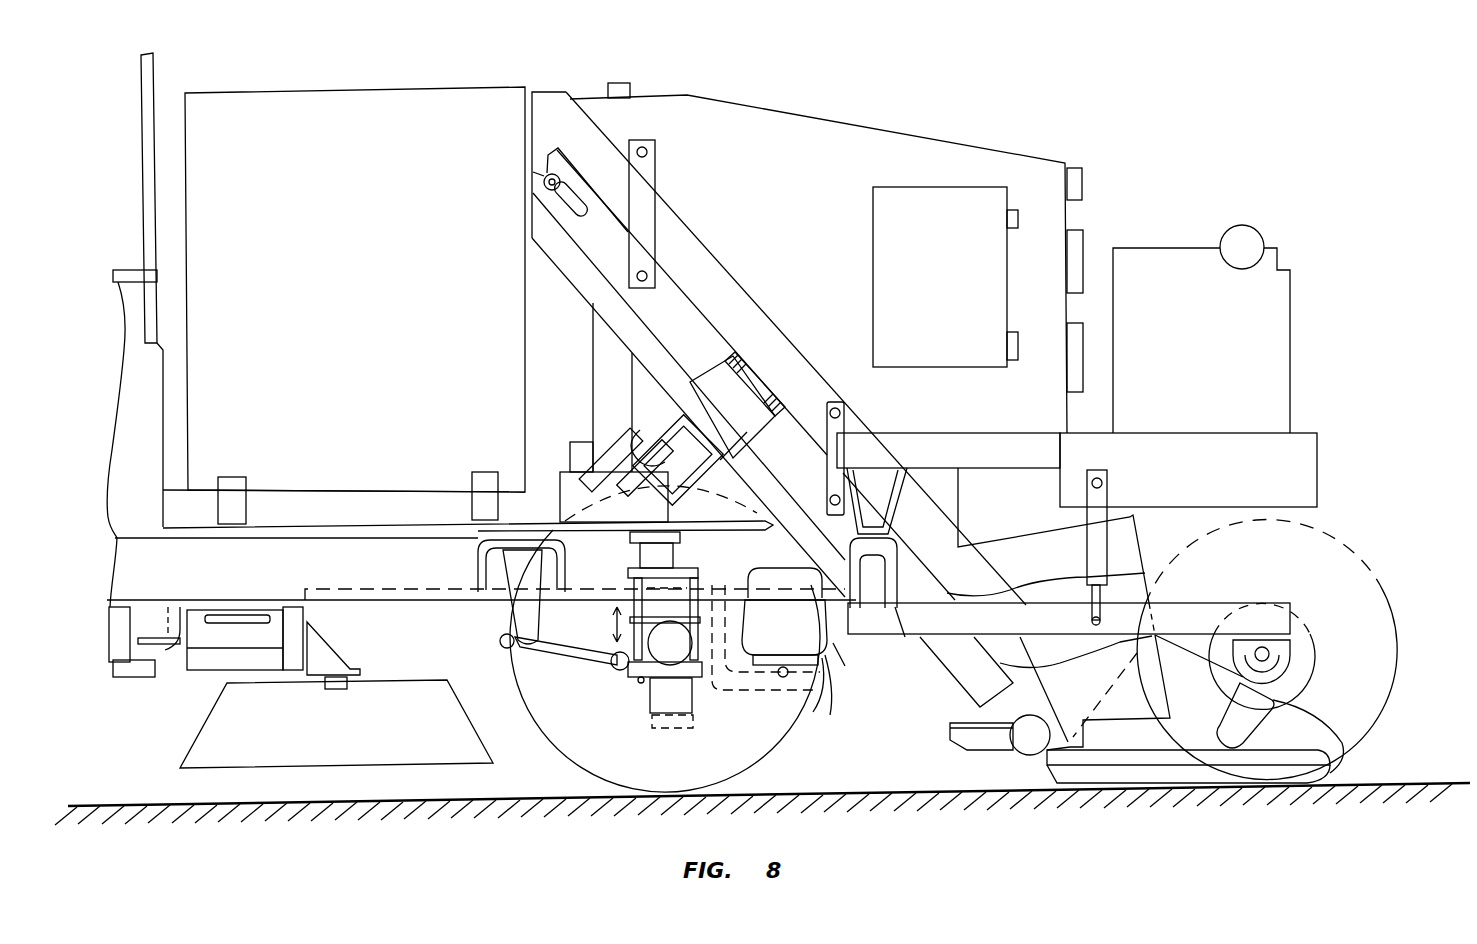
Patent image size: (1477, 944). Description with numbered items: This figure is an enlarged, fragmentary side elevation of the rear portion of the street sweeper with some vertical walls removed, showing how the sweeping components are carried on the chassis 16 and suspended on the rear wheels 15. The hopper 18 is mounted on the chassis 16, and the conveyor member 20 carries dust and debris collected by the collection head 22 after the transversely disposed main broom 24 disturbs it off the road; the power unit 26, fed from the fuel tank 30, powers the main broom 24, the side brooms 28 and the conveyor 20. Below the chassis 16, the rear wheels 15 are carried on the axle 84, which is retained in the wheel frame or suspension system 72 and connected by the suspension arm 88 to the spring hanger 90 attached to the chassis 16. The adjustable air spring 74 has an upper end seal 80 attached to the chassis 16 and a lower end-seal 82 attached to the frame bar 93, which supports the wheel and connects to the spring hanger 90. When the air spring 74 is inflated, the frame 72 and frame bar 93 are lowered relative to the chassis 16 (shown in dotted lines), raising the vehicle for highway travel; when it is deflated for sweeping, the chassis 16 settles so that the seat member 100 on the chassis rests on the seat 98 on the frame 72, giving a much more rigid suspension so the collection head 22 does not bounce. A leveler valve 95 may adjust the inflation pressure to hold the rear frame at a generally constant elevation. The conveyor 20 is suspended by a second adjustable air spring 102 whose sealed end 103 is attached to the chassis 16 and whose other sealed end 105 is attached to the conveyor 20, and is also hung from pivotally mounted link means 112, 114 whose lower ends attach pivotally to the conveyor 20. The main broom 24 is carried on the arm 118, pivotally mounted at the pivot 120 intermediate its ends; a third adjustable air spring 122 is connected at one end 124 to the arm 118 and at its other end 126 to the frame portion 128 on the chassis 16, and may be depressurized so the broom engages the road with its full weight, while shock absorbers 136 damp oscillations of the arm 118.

The wheels 15 is at (690, 759).
The chassis 16 is at (405, 572).
The hopper 18 is at (363, 285).
The conveyor member 20 is at (683, 332).
The collection head 22 is at (1208, 704).
The main broom 24 is at (1346, 614).
The power unit 26 is at (1208, 338).
The side brooms 28 is at (348, 729).
The fuel tank 30 is at (950, 268).
The suspension system 72 is at (636, 700).
The adjustable air spring 74 is at (833, 643).
The upper end seal 80 is at (790, 568).
The lower end-seal 82 is at (816, 705).
The axle 84 is at (678, 660).
The suspension arm 88 is at (530, 664).
The spring hanger 90 is at (503, 605).
The frame bar 93 is at (808, 738).
The leveler valve 95 is at (640, 682).
The seat 98 is at (690, 578).
The seat member 100 is at (640, 556).
The adjustable air spring 102 is at (652, 423).
The sealed end 103 is at (617, 447).
The sealed end 105 is at (709, 428).
The link means 112 is at (640, 166).
The link means 114 is at (845, 430).
The arm 118 is at (1343, 548).
The pivot 120 is at (958, 726).
The adjustable air spring 122 is at (900, 640).
The end 124 is at (878, 615).
The end 126 is at (873, 505).
The frame portion 128 is at (902, 463).
The shock absorbers 136 is at (1108, 540).